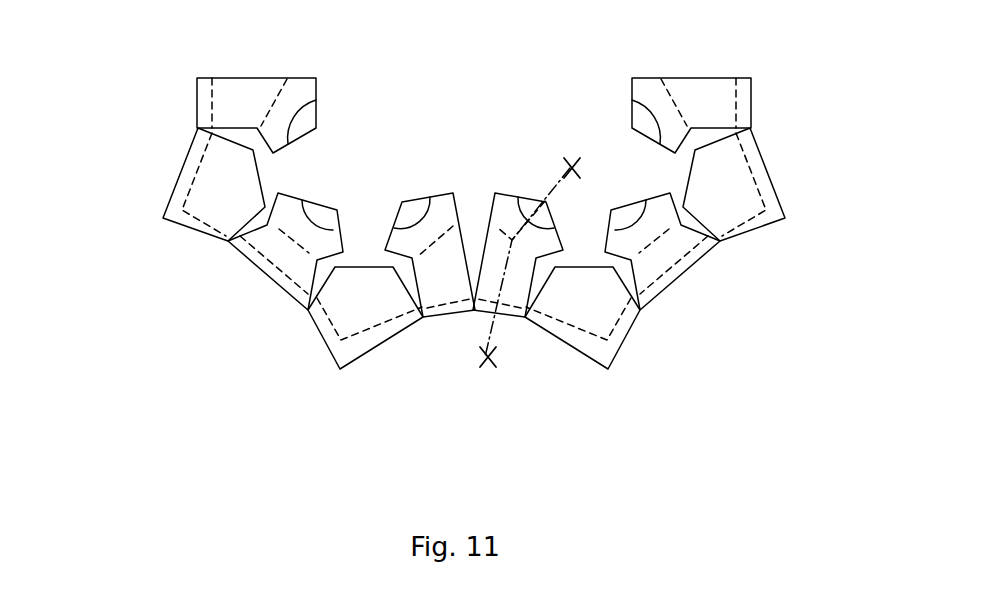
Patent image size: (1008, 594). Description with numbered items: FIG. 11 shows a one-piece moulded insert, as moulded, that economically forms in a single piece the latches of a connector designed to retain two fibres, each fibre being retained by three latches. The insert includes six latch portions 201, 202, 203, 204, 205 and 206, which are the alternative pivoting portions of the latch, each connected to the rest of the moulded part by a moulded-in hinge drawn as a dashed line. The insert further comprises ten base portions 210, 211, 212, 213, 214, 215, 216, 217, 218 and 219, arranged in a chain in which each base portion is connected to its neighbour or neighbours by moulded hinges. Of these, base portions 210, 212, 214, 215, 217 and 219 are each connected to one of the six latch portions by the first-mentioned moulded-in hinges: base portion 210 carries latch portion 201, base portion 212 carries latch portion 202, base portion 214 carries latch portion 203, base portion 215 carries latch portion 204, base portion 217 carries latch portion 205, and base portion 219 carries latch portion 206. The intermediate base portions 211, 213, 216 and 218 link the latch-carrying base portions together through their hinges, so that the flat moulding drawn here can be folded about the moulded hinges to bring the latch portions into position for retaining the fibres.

The latch portion 201 is at (225, 86).
The latch portion 202 is at (255, 268).
The latch portion 203 is at (430, 294).
The latch portion 204 is at (526, 283).
The latch portion 205 is at (683, 258).
The latch portion 206 is at (648, 95).
The base portion 210 is at (222, 102).
The base portion 211 is at (203, 203).
The base portion 212 is at (283, 255).
The base portion 213 is at (365, 303).
The base portion 214 is at (442, 288).
The base portion 215 is at (518, 285).
The base portion 216 is at (595, 325).
The base portion 217 is at (655, 267).
The base portion 218 is at (733, 197).
The base portion 219 is at (726, 84).